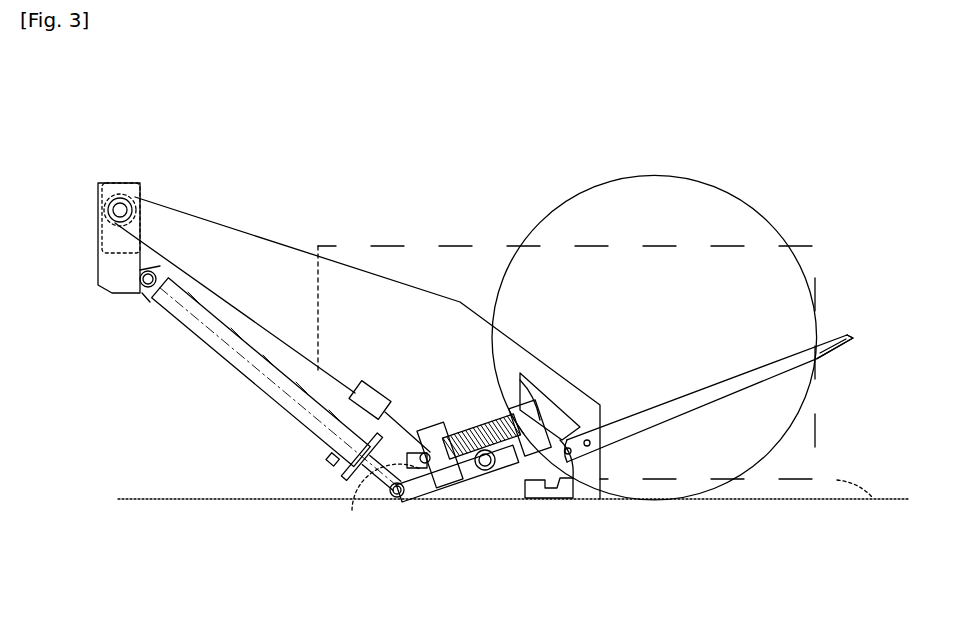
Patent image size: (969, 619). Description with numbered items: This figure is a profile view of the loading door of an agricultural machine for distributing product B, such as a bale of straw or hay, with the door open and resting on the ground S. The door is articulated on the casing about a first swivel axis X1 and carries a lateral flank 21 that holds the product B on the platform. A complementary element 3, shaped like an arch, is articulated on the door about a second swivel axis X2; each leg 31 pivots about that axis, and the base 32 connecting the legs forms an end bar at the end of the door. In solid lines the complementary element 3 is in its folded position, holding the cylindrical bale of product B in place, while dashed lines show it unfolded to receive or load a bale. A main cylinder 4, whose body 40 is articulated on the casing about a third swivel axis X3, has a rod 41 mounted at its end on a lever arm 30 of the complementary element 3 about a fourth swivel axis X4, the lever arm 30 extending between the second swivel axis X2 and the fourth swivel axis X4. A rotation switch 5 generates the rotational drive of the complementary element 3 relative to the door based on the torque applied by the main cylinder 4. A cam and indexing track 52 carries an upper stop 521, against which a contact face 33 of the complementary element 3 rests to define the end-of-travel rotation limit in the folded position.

The first swivel axis X1 is at (117, 197).
The third swivel axis X3 is at (147, 289).
The flank 21 is at (415, 307).
The upper stop 521 is at (495, 398).
The contact face 33 is at (512, 395).
The cam and indexing track 52 is at (538, 400).
The product B is at (693, 247).
The base 32 is at (850, 335).
The leg 31 is at (777, 363).
The complementary element 3 is at (749, 386).
The ground S is at (888, 498).
The main cylinder 4 is at (242, 380).
The body 40 is at (298, 430).
The rod 41 is at (365, 467).
The fourth swivel axis X4 is at (395, 496).
The lever arm 30 is at (425, 480).
The second swivel axis X2 is at (490, 474).
The rotation switch 5 is at (582, 483).